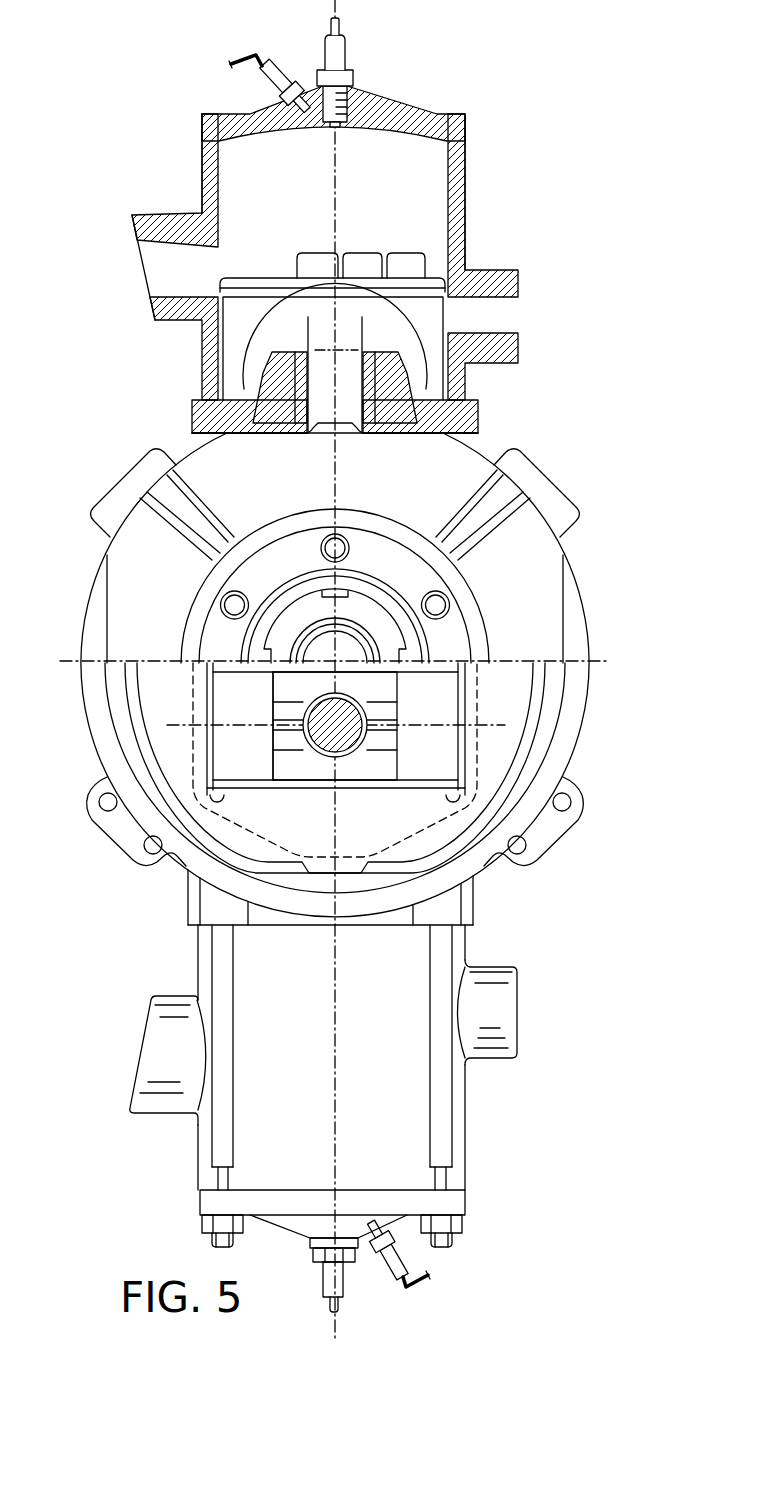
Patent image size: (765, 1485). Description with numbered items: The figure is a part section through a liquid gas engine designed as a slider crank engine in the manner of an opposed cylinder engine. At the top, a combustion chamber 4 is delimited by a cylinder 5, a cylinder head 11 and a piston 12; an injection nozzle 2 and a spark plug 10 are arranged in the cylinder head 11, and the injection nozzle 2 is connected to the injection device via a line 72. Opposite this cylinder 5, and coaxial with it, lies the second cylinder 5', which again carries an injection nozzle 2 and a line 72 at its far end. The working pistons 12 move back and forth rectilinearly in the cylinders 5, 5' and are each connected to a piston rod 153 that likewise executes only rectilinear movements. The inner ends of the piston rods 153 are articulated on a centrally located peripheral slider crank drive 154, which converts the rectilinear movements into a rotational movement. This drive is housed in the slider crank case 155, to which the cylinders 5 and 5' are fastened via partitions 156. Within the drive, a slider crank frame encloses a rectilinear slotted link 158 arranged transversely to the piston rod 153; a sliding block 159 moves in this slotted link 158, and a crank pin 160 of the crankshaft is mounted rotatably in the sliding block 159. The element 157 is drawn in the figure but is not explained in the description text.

The injection nozzle 2 is at (288, 90).
The line 72 is at (243, 57).
The spark plug 10 is at (346, 53).
The cylinder head 11 is at (386, 107).
The combustion chamber 4 is at (428, 153).
The cylinder 5 is at (363, 273).
The cylinder 5' is at (339, 1118).
The piston 12 is at (233, 335).
The piston rod 153 is at (333, 385).
The partition 156 is at (400, 386).
The slider crank case 155 is at (79, 609).
The slider crank drive 154 is at (506, 690).
The crank web 157 is at (452, 788).
The slotted link 158 is at (418, 770).
The sliding block 159 is at (302, 773).
The crank pin 160 is at (323, 735).